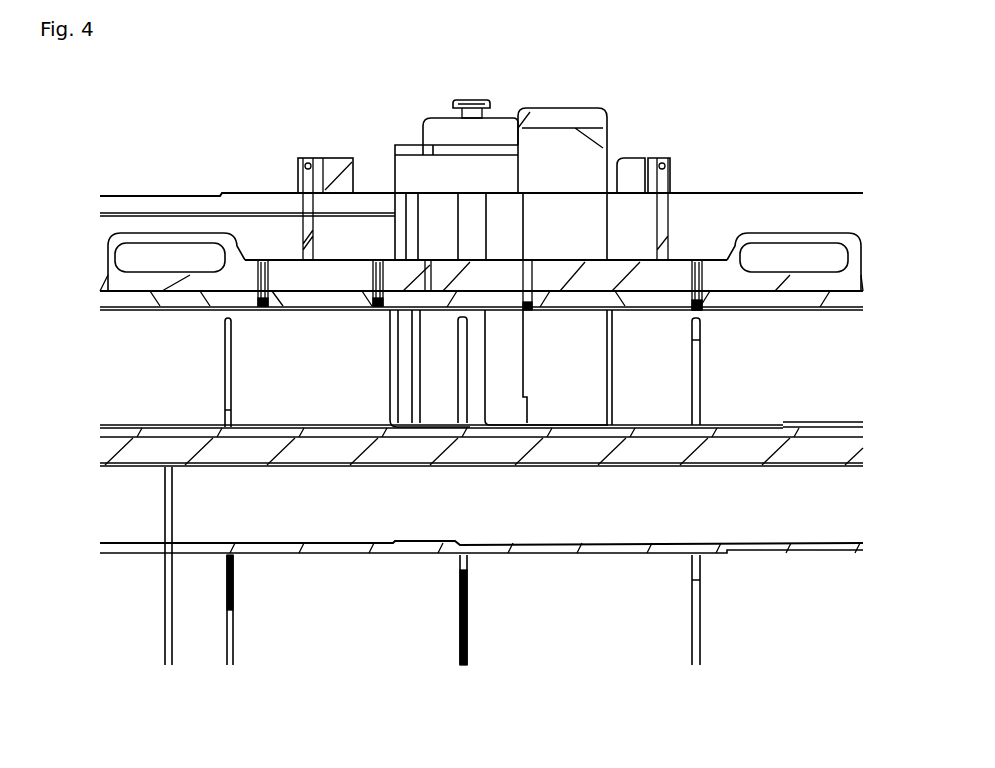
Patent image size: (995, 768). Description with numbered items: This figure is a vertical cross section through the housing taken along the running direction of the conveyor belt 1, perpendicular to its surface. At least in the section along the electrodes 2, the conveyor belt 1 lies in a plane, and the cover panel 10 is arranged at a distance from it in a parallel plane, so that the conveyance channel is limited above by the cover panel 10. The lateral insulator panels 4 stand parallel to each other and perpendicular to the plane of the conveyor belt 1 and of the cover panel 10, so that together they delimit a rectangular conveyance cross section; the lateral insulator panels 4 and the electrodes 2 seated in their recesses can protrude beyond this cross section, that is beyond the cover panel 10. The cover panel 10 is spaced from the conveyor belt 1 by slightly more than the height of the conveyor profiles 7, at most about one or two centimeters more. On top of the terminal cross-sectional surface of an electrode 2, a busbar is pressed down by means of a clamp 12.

The conveyor belt 1 is at (316, 429).
The electrodes 2 is at (464, 222).
The lateral insulator panels 4 is at (505, 222).
The conveyor profiles 7 is at (454, 377).
The cover panel 10 is at (174, 298).
The clamp 12 is at (446, 110).